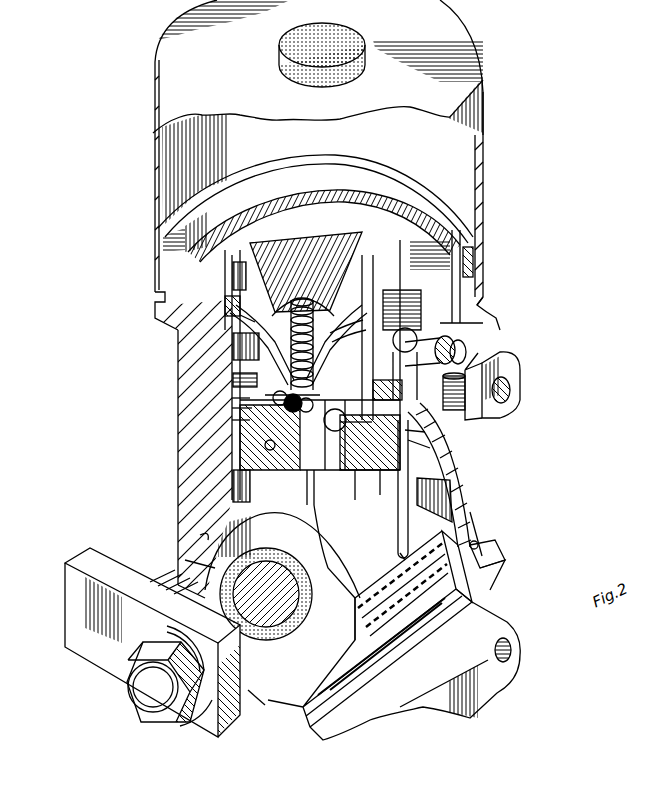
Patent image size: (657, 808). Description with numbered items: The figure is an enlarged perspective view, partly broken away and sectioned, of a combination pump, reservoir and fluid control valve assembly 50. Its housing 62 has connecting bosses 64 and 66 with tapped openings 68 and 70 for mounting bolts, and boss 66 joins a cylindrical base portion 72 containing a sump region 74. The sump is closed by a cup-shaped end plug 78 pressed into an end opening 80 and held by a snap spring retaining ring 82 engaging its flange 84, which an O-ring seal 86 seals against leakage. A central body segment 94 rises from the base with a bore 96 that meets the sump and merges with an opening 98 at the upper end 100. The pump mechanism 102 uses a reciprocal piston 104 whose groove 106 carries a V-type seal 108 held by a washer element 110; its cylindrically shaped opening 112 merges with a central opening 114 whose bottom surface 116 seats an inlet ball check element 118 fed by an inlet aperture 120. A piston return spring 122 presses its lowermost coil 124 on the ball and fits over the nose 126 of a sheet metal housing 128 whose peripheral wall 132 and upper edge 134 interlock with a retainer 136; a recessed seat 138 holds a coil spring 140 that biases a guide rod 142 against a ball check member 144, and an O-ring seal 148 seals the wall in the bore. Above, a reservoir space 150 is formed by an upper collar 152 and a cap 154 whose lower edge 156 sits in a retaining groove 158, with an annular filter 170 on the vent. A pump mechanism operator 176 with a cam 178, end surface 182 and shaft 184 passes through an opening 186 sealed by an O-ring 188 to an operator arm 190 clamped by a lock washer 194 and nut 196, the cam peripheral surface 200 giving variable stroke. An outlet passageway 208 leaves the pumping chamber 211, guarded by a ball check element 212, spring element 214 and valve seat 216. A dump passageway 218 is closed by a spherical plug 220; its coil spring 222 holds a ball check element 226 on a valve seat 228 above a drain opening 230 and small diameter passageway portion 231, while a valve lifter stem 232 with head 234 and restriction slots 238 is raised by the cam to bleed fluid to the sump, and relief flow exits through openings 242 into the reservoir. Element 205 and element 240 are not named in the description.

The assembly 50 is at (486, 208).
The housing 62 is at (180, 376).
The connecting boss 64 is at (510, 420).
The connecting boss 66 is at (480, 690).
The tapped opening 68 is at (510, 392).
The tapped opening 70 is at (512, 652).
The base portion 72 is at (470, 580).
The sump region 74 is at (345, 562).
The end plug 78 is at (476, 540).
The end opening 80 is at (490, 541).
The snap spring retaining ring 82 is at (474, 517).
The flange 84 is at (498, 562).
The O-ring seal 86 is at (474, 590).
The central body segment 94 is at (178, 426).
The bore 96 is at (232, 356).
The opening 98 is at (380, 290).
The upper end 100 is at (180, 336).
The pump mechanism 102 is at (300, 485).
The reciprocal piston 104 is at (200, 468).
The groove 106 is at (282, 554).
The annular block V-type seal 108 is at (242, 442).
The washer element 110 is at (300, 510).
The cylindrically shaped opening 112 is at (232, 398).
The central opening 114 is at (262, 440).
The bottom surface 116 is at (283, 426).
The inlet ball check element 118 is at (288, 412).
The inlet aperture 120 is at (300, 466).
The piston return spring 122 is at (248, 408).
The lowermost coil 124 is at (245, 420).
The nose 126 is at (240, 379).
The housing 128 is at (240, 347).
The peripheral wall 132 is at (226, 292).
The upper edge 134 is at (350, 242).
The retainer 136 is at (335, 226).
The recessed seat 138 is at (330, 300).
The coil spring 140 is at (303, 300).
The guide rod 142 is at (252, 362).
The ball check member 144 is at (328, 430).
The O-ring seal 148 is at (230, 310).
The reservoir space 150 is at (418, 186).
The upper collar 152 is at (462, 245).
The cap 154 is at (483, 95).
The lower edge 156 is at (486, 305).
The retaining groove 158 is at (473, 268).
The annular filter 170 is at (290, 78).
The pump mechanism operator 176 is at (326, 635).
The cam 178 is at (215, 565).
The end surface 182 is at (350, 680).
The shaft 184 is at (250, 700).
The opening 186 is at (200, 535).
The O-ring 188 is at (288, 594).
The operator arm 190 is at (100, 656).
The lock washer 194 is at (192, 722).
The nut 196 is at (122, 698).
The peripheral surface 200 is at (278, 712).
The groove 205 is at (402, 600).
The outlet passageway 208 is at (470, 338).
The variable volume pumping chamber 211 is at (412, 306).
The ball check element 212 is at (322, 362).
The spring element 214 is at (342, 421).
The valve seat 216 is at (400, 362).
The fluid dump passageway 218 is at (417, 340).
The spherical plug 220 is at (458, 336).
The coil spring 222 is at (426, 432).
The ball check element 226 is at (432, 449).
The valve seat 228 is at (370, 442).
The drain opening 230 is at (366, 485).
The small diameter passageway portion 231 is at (450, 482).
The valve lifter stem 232 is at (398, 505).
The head 234 is at (398, 490).
The restriction slots 238 is at (456, 502).
The roller 240 is at (463, 399).
The openings 242 is at (242, 318).